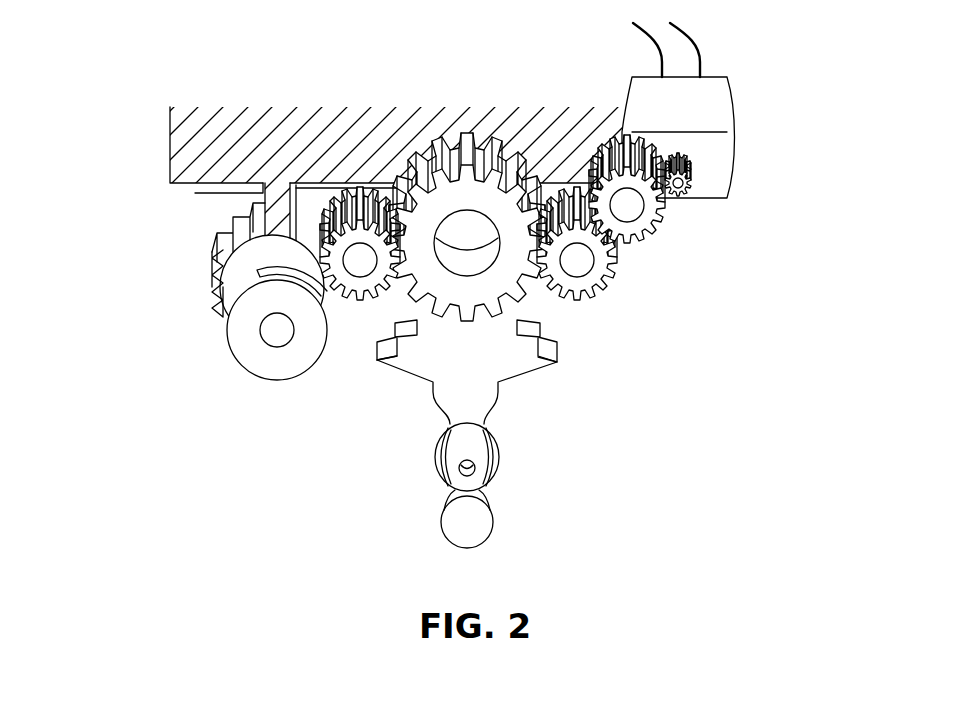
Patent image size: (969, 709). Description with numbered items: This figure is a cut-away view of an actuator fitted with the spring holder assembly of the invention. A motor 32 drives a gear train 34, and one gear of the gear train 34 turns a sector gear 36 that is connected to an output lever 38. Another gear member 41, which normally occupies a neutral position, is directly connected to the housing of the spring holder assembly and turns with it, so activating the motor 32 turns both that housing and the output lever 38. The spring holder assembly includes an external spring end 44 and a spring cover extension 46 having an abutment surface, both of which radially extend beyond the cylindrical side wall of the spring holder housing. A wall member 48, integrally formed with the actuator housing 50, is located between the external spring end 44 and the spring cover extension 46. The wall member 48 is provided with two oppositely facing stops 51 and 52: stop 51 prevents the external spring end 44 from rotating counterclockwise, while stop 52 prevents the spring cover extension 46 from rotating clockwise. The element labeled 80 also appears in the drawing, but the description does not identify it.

The motor 32 is at (723, 170).
The gear train 34 is at (678, 262).
The sector gear 36 is at (510, 360).
The output lever 38 is at (470, 522).
The gear member 41 is at (212, 260).
The external spring end 44 is at (324, 318).
The spring cover extension 46 is at (257, 282).
The wall member 48 is at (280, 200).
The actuator housing 50 is at (170, 127).
The stop 51 is at (333, 185).
The stop 52 is at (195, 193).
The roller 80 is at (245, 349).